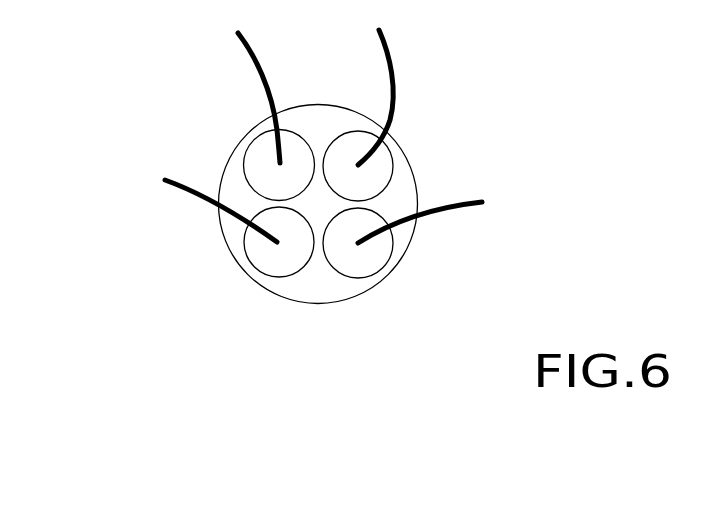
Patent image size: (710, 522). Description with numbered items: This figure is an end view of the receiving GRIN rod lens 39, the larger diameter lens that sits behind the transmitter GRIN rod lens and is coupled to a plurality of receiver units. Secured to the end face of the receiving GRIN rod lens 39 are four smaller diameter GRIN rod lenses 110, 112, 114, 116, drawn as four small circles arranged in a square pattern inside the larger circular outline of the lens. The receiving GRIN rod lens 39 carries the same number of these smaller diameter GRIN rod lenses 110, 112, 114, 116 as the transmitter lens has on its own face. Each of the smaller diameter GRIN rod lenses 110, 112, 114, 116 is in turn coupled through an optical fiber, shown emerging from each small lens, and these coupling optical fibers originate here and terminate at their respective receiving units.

The receiving GRIN rod lens 39 is at (315, 292).
The smaller diameter GRIN rod lens 110 is at (262, 147).
The smaller diameter GRIN rod lens 112 is at (392, 150).
The smaller diameter GRIN rod lens 114 is at (262, 265).
The smaller diameter GRIN rod lens 116 is at (372, 258).